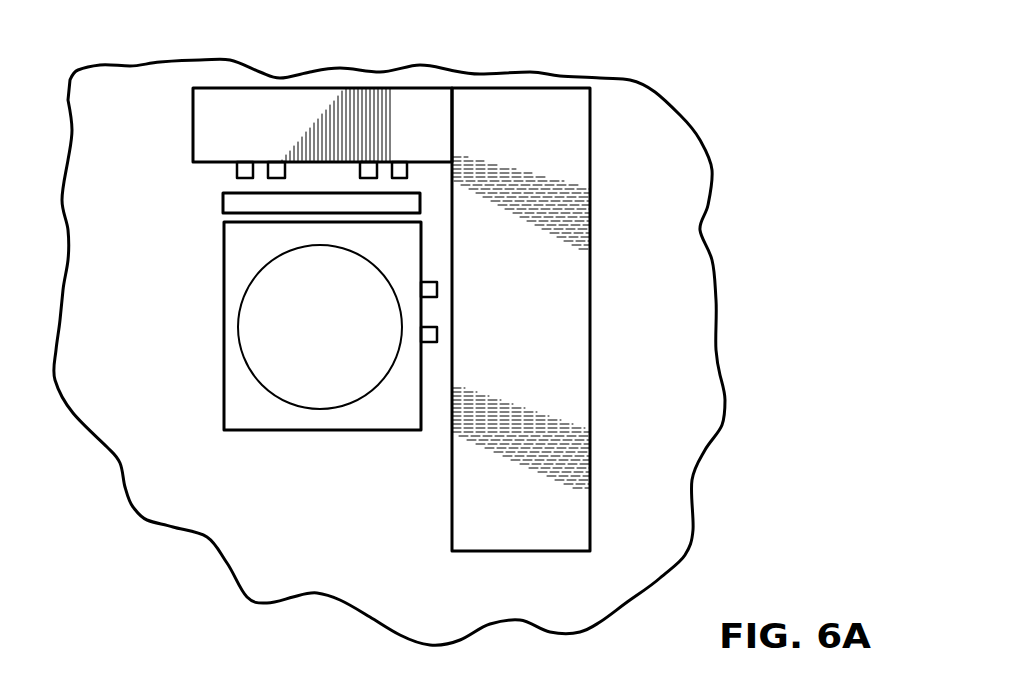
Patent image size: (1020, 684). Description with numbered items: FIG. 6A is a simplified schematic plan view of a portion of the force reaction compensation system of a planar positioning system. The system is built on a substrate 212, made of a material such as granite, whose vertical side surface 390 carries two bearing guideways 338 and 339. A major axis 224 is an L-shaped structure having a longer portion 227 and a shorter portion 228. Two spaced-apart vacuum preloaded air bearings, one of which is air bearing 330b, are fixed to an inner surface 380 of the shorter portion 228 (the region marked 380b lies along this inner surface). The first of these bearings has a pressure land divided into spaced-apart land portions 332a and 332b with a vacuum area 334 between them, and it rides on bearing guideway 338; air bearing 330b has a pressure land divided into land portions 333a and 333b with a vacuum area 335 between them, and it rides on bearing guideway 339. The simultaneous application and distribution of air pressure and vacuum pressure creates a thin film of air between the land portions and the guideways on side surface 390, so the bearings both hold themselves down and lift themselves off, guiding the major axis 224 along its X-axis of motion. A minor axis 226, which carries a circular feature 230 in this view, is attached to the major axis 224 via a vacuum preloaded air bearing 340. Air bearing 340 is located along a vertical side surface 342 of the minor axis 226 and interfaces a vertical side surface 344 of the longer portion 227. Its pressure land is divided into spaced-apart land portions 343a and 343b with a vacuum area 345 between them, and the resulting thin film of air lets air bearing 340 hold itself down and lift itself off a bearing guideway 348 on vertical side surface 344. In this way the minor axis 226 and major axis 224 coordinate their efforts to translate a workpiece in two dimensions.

The substrate 212 is at (195, 513).
The major axis 224 is at (435, 303).
The minor axis 226 is at (222, 423).
The longer portion 227 is at (522, 535).
The shorter portion 228 is at (296, 100).
The circular sensor element 230 is at (288, 385).
The vacuum preloaded air bearing 330b is at (427, 180).
The land portion 332a is at (245, 163).
The land portion 332b is at (277, 162).
The land portion 333a is at (365, 165).
The land portion 333b is at (397, 167).
The vacuum area 334 is at (262, 177).
The vacuum area 335 is at (383, 175).
The bearing guideway 338 is at (228, 191).
The bearing guideway 339 is at (423, 185).
The vacuum preloaded air bearing 340 is at (442, 418).
The vertical side surface 342 is at (428, 417).
The land portion 343a is at (425, 287).
The land portion 343b is at (425, 337).
The vertical side surface 344 is at (449, 529).
The vacuum area 345 is at (437, 315).
The bearing guideway 348 is at (450, 337).
The inner surface 380 is at (200, 163).
The flow path branch 380b is at (222, 183).
The vertical side surface 390 is at (310, 205).